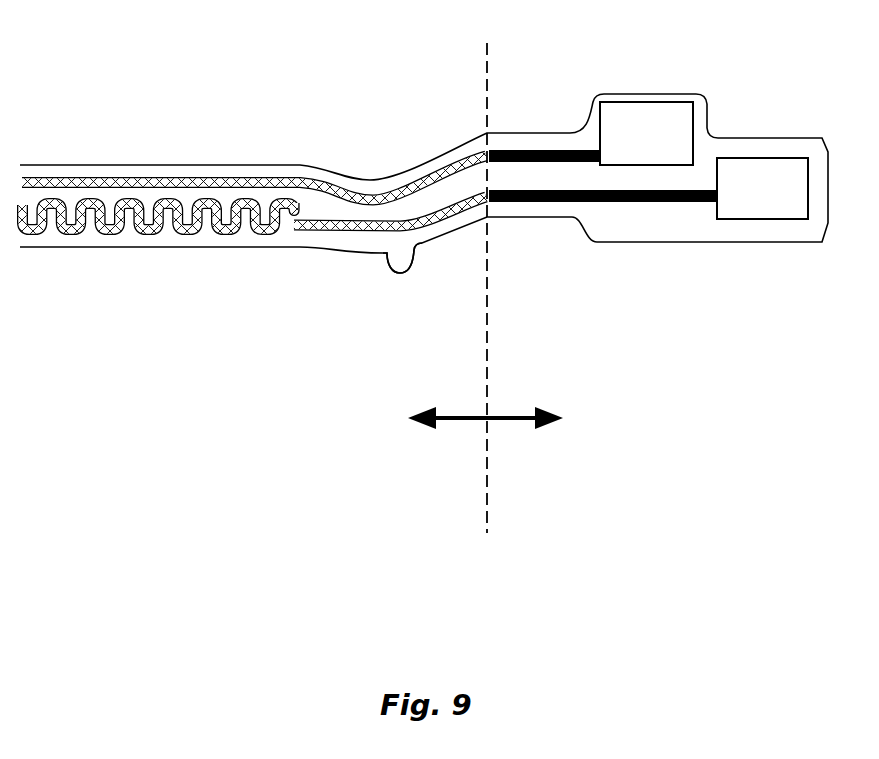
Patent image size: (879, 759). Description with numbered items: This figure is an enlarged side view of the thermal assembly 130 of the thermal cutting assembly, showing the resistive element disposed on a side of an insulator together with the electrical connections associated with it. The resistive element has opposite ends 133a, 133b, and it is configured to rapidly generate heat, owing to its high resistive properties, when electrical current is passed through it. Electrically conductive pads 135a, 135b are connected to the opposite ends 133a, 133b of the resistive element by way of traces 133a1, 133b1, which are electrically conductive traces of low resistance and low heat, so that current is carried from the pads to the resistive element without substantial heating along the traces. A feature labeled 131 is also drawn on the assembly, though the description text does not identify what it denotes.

The thermal assembly 130 is at (170, 157).
The end of resistive element 133a is at (243, 165).
The end of resistive element 133b is at (260, 245).
The protrusion 131 is at (400, 266).
The trace 133a1 is at (527, 150).
The trace 133b1 is at (507, 202).
The electrically conductive pad 135a is at (648, 117).
The electrically conductive pad 135b is at (760, 205).